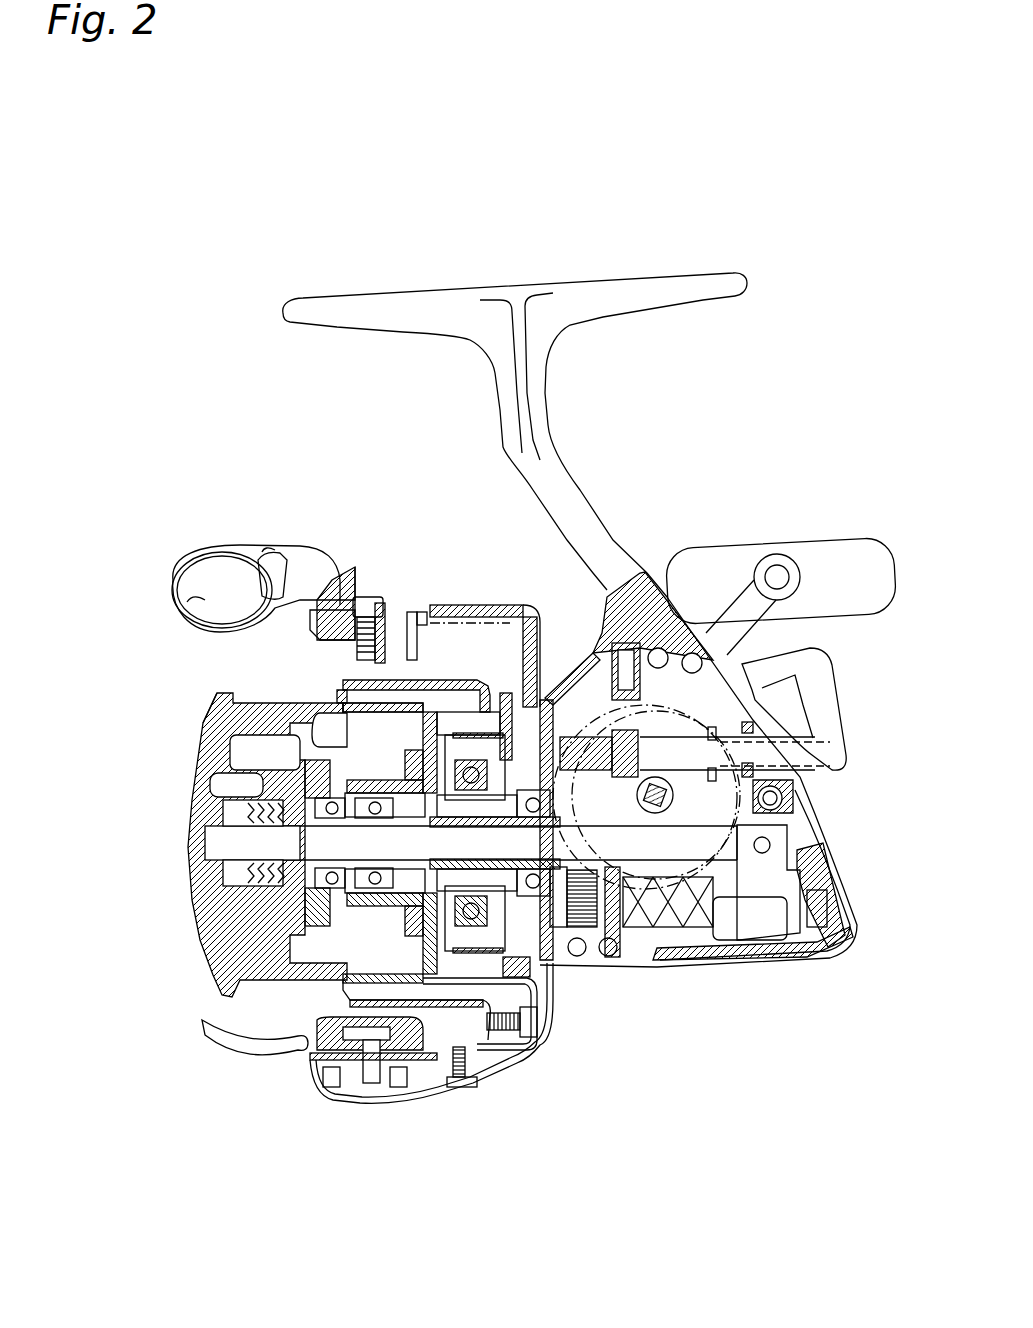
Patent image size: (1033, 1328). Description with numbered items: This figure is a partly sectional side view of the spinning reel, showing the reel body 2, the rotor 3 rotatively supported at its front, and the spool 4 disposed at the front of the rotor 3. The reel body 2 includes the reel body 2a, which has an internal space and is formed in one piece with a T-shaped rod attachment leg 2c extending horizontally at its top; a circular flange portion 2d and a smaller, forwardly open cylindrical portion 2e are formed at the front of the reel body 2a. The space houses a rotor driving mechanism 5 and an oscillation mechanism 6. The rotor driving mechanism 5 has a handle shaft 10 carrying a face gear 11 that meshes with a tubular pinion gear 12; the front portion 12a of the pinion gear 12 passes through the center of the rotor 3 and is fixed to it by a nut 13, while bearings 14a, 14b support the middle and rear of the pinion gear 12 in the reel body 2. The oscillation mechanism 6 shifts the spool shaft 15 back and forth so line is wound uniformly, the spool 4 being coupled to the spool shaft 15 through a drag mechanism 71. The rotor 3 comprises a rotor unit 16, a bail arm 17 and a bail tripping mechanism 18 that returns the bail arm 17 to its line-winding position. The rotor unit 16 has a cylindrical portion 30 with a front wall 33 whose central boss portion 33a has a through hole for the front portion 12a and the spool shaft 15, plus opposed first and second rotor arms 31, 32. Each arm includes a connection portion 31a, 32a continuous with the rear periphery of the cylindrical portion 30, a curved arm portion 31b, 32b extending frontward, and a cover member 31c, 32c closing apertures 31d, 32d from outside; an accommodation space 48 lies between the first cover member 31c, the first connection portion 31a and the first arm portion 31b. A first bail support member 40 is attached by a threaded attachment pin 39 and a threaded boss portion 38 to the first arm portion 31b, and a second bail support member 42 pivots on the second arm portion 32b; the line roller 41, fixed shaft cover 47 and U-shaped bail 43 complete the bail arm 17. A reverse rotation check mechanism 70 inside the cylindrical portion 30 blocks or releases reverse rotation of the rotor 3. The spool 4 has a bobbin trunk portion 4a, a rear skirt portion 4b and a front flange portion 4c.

The reel body 2 is at (828, 836).
The reel body 2a is at (825, 845).
The T-shaped rod attachment leg 2c is at (688, 288).
The circular flange portion 2d is at (562, 1035).
The cylindrical portion 2e is at (513, 680).
The rotor 3 is at (542, 1022).
The spool 4 is at (256, 710).
The bobbin trunk portion 4a is at (275, 710).
The skirt portion 4b is at (377, 992).
The flange portion 4c is at (230, 710).
The rotor driving mechanism 5 is at (800, 740).
The oscillation mechanism 6 is at (650, 945).
The handle shaft 10 is at (645, 955).
The face gear 11 is at (727, 965).
The pinion gear 12 is at (583, 965).
The front portion 12a is at (358, 880).
The nut 13 is at (420, 868).
The bearing 14a is at (560, 1010).
The bearing 14b is at (630, 955).
The spool shaft 15 is at (290, 850).
The rotor unit 16 is at (433, 680).
The bail arm 17 is at (198, 647).
The bail tripping mechanism 18 is at (415, 640).
The cylindrical portion 30 is at (386, 704).
The first rotor arm 31 is at (345, 668).
The first connection portion 31a is at (483, 680).
The first arm portion 31b is at (372, 600).
The first cover member 31c is at (506, 660).
The aperture 31d is at (393, 640).
The second rotor arm 32 is at (445, 1048).
The second connection portion 32a is at (487, 1047).
The second arm portion 32b is at (378, 1087).
The second cover member 32c is at (418, 1092).
The aperture 32d is at (327, 1095).
The front wall 33 is at (435, 720).
The bearing housing 33a is at (400, 795).
The threaded boss portion 38 is at (345, 640).
The threaded attachment pin 39 is at (365, 600).
The first bail support member 40 is at (280, 555).
The line roller 41 is at (175, 583).
The second bail support member 42 is at (327, 1055).
The bail 43 is at (277, 563).
The fixed shaft cover 47 is at (205, 600).
The accommodation space 48 is at (390, 625).
The reverse rotation check mechanism 70 is at (455, 940).
The drag mechanism 71 is at (310, 1043).